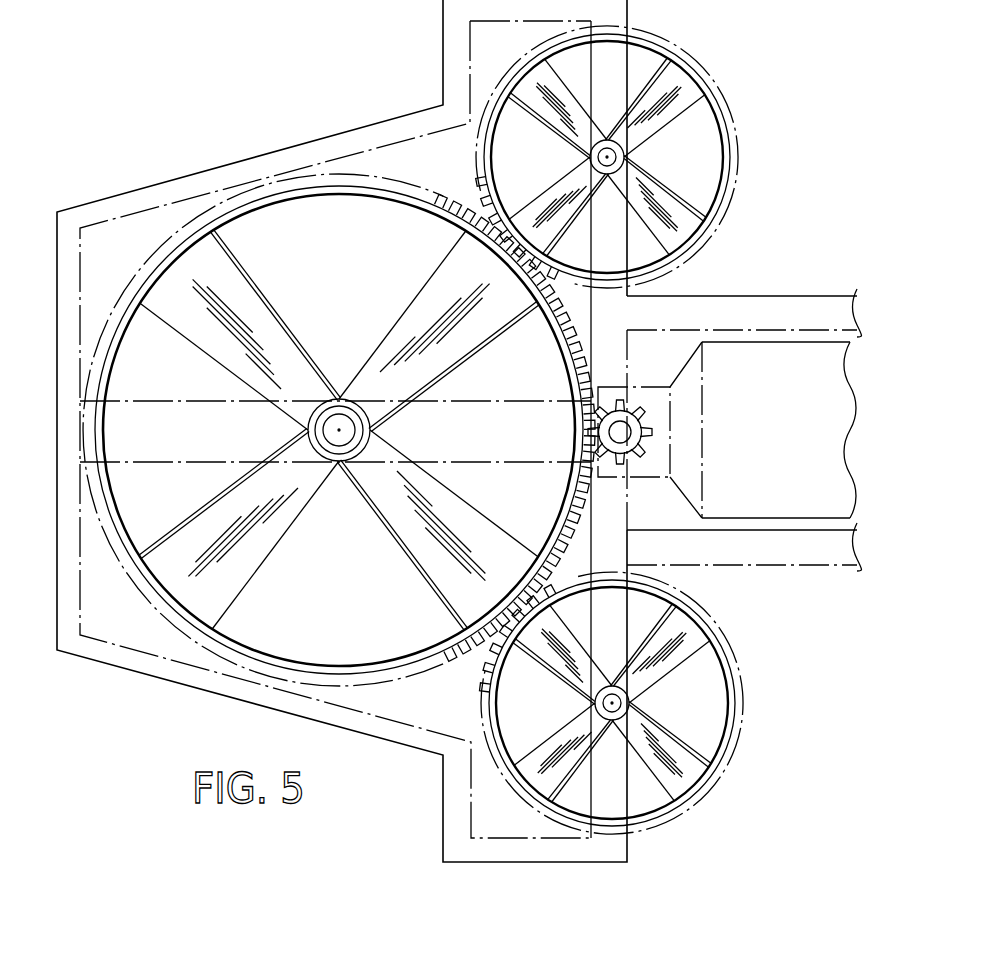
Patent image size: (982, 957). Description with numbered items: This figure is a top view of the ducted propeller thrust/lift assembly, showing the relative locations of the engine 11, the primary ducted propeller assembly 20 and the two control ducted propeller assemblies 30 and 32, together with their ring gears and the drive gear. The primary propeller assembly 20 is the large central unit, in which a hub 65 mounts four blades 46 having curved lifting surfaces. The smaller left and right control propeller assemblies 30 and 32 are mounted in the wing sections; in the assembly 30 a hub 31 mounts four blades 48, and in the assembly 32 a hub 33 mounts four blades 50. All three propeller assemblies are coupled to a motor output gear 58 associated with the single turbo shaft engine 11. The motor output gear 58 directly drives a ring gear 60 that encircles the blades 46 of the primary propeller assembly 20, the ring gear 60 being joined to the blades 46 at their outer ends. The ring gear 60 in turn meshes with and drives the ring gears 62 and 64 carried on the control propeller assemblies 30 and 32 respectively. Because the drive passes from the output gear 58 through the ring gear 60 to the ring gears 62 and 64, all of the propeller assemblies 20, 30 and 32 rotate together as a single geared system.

The engine 11 is at (793, 520).
The primary propeller assembly 20 is at (219, 661).
The control propeller assembly 30 is at (750, 715).
The hub 31 is at (630, 703).
The control propeller assembly 32 is at (731, 106).
The hub 33 is at (624, 157).
The blades 46 is at (382, 343).
The blades 48 is at (692, 777).
The blades 50 is at (670, 77).
The motor output gear 58 is at (624, 406).
The ring gear 60 is at (586, 496).
The ring gear 62 is at (477, 672).
The ring gear 64 is at (476, 196).
The hub 65 is at (332, 462).